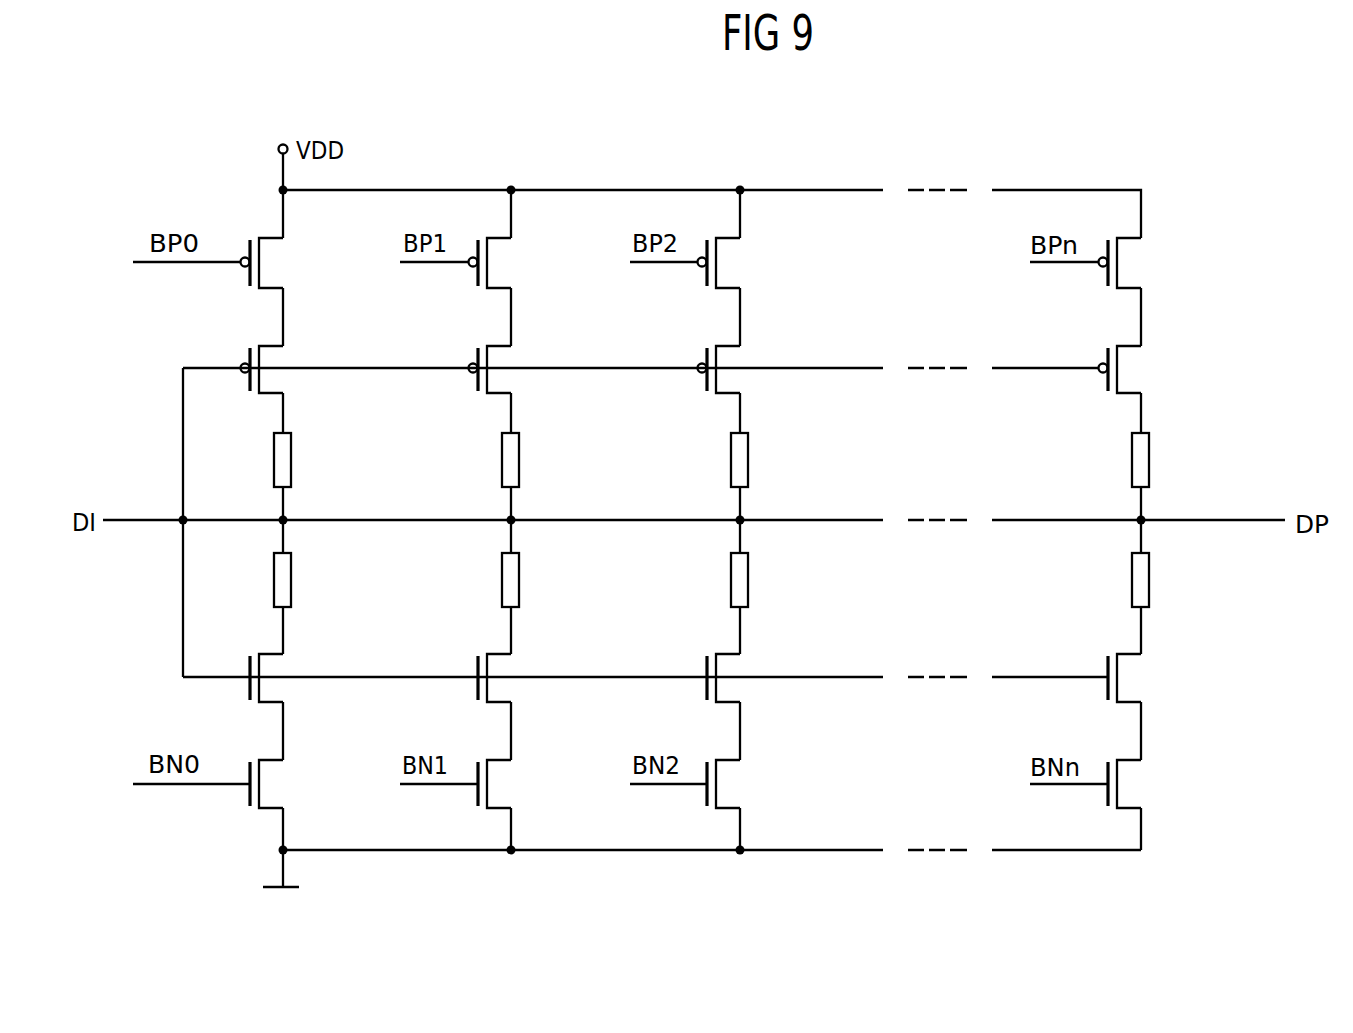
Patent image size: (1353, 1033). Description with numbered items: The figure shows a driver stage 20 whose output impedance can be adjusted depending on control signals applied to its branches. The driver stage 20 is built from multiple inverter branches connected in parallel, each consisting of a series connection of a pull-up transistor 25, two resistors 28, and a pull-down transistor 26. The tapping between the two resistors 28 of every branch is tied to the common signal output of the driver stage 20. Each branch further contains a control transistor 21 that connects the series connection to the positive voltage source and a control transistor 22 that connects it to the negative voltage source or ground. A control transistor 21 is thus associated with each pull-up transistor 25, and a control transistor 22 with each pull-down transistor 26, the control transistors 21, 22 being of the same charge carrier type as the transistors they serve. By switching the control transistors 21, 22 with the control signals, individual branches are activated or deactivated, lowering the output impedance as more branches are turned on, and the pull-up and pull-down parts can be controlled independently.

The driver stage 20 is at (165, 162).
The control transistor 21 is at (270, 259).
The control transistor 22 is at (270, 780).
The pull-up transistor 25 is at (272, 376).
The pull-down transistor 26 is at (270, 686).
The resistor 28 is at (291, 457).